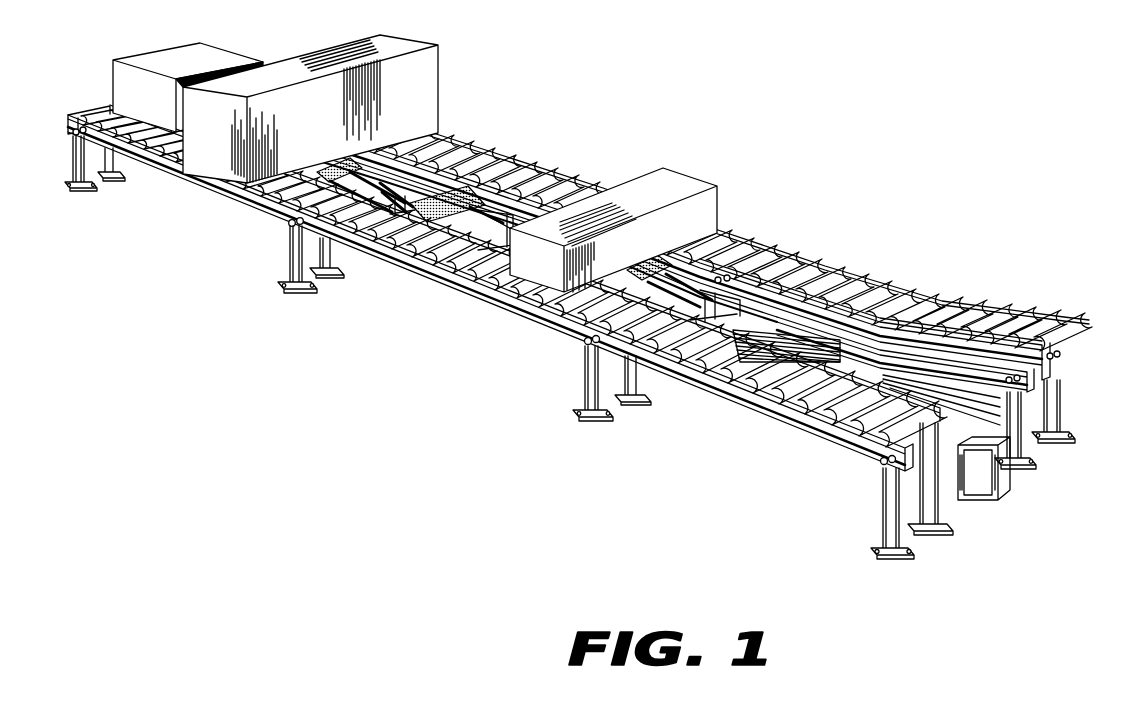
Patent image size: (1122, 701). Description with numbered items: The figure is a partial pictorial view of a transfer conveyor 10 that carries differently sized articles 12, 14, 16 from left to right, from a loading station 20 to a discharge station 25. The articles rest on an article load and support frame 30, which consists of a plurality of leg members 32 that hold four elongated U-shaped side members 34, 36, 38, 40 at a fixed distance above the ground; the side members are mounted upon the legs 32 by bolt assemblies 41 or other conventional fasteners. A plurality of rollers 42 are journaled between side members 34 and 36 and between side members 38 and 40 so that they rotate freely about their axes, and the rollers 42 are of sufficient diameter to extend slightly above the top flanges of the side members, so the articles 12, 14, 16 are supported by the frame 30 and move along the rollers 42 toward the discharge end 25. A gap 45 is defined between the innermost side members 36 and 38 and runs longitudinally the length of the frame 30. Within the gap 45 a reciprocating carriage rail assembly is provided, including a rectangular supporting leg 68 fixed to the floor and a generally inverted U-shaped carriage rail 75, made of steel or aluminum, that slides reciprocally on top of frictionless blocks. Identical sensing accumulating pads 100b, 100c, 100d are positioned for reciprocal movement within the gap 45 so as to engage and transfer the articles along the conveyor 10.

The transfer conveyor 10 is at (764, 80).
The article 12 is at (665, 183).
The article 14 is at (428, 102).
The article 16 is at (213, 58).
The loading station 20 is at (66, 79).
The discharge station 25 is at (981, 268).
The article load and support frame 30 is at (168, 188).
The leg members 32 is at (118, 180).
The side member 34 is at (508, 306).
The side member 36 is at (948, 500).
The side member 38 is at (866, 327).
The side member 40 is at (1009, 326).
The bolt assemblies 41 is at (73, 133).
The rollers 42 is at (845, 280).
The gap 45 is at (932, 360).
The supporting leg 68 is at (992, 490).
The carriage rail 75 is at (768, 331).
The sensing accumulating pad 100b is at (427, 152).
The sensing accumulating pad 100c is at (560, 178).
The sensing accumulating pad 100d is at (733, 240).